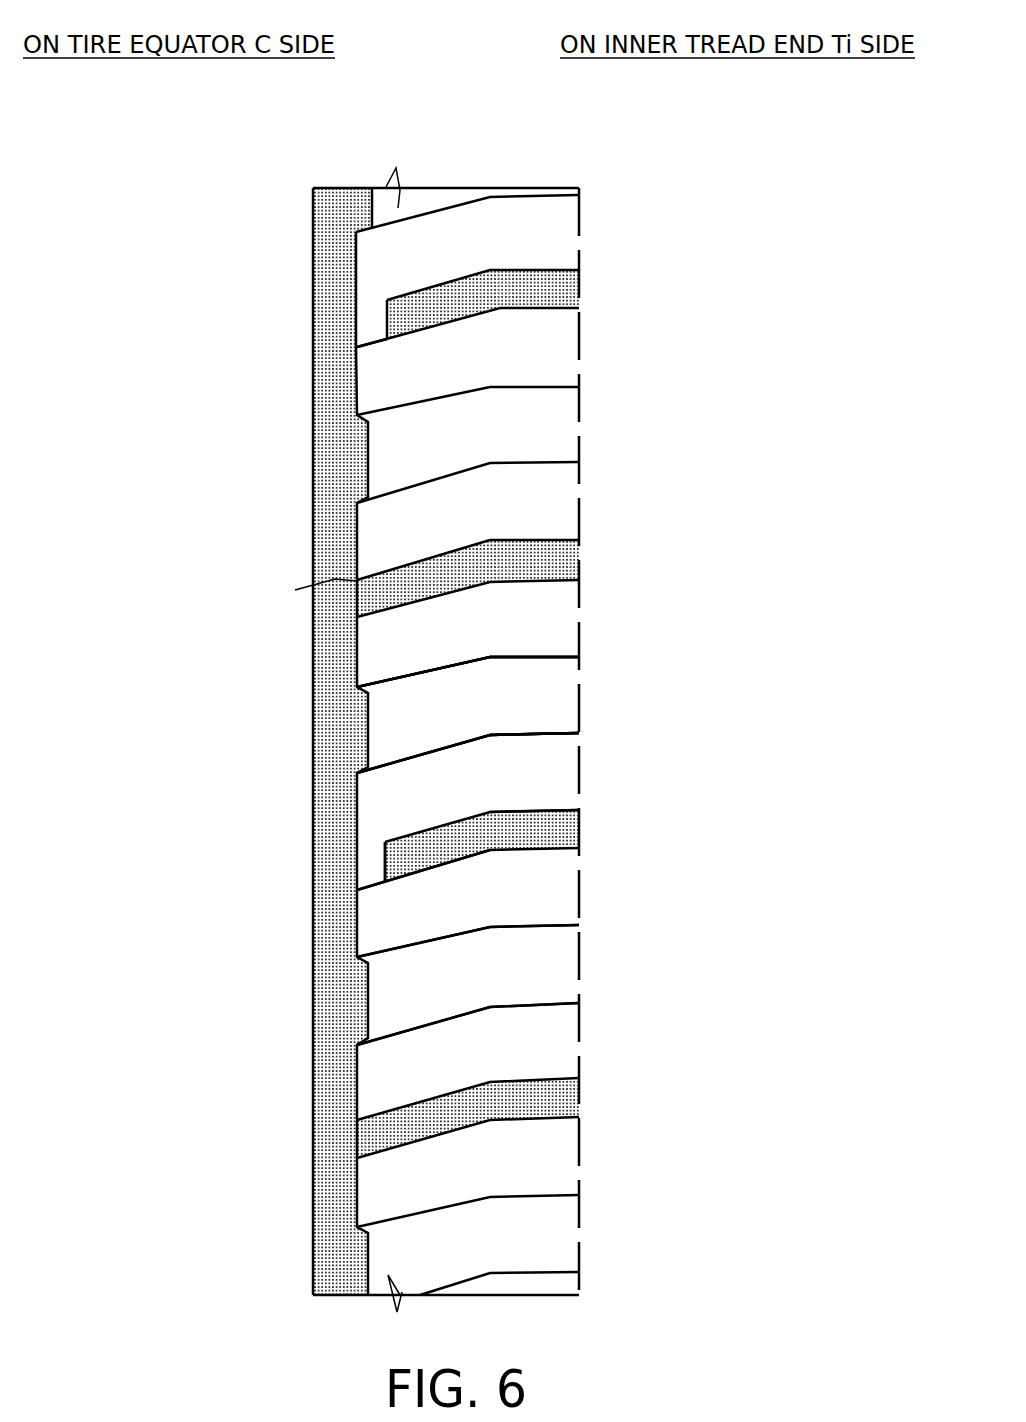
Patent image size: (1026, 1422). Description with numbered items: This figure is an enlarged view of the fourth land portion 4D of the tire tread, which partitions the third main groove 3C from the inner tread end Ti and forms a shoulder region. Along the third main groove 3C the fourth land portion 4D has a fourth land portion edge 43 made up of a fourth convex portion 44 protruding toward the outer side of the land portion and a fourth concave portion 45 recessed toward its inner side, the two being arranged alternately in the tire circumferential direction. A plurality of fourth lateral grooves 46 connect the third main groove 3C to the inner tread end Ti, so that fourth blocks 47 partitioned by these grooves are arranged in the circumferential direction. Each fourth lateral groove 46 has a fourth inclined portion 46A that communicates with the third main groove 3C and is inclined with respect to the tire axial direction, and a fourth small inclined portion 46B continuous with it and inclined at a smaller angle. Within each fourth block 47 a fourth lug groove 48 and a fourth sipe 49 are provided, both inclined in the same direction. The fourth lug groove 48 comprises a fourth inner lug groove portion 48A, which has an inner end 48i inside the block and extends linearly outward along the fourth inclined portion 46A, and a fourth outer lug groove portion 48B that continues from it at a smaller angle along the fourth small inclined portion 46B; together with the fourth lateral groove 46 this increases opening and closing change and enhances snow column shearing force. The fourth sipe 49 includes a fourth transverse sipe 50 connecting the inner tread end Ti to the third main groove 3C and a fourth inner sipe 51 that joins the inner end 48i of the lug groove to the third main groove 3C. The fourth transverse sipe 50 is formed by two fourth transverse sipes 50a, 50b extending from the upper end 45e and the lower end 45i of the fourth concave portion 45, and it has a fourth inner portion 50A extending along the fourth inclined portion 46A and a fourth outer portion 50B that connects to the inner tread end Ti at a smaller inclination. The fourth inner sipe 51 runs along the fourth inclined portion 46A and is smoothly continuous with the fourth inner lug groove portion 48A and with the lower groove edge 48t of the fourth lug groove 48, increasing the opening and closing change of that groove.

The third main groove 3C is at (337, 214).
The fourth land portion 4D is at (466, 236).
The fourth block 47 is at (467, 745).
The inner tread end Ti is at (580, 222).
The fourth inner sipe 51 is at (372, 337).
The groove edge 48t is at (430, 331).
The fourth inner portion 50A is at (433, 400).
The fourth outer portion 50B is at (537, 385).
The fourth lateral groove 46 is at (703, 458).
The fourth inclined portion 46A is at (417, 582).
The fourth small inclined portion 46B is at (537, 562).
The one end of the fourth concave portion 45e is at (370, 690).
The another end of the fourth concave portion 45i is at (357, 772).
The fourth sipe 49 is at (703, 659).
The fourth transverse sipe 50 is at (468, 715).
The fourth transverse sipe 50a is at (533, 657).
The fourth transverse sipe 50b is at (538, 733).
The fourth lug groove 48 is at (703, 863).
The inner end 48i is at (385, 860).
The fourth inner lug groove portion 48A is at (433, 850).
The fourth outer lug groove portion 48B is at (532, 832).
The fourth land portion edge 43 is at (200, 982).
The fourth concave portion 45 is at (368, 1002).
The fourth convex portion 44 is at (357, 1080).